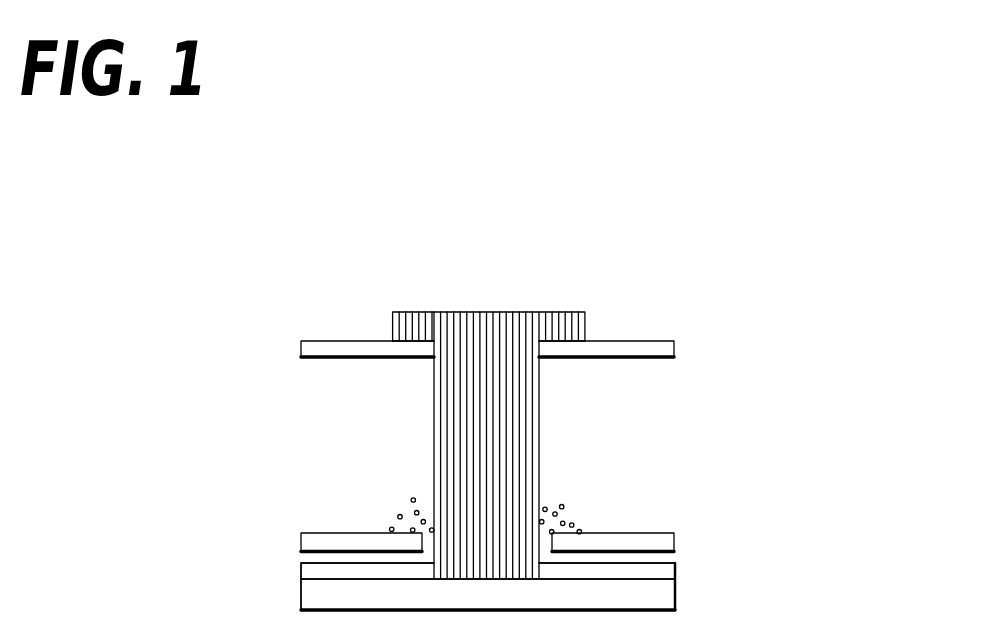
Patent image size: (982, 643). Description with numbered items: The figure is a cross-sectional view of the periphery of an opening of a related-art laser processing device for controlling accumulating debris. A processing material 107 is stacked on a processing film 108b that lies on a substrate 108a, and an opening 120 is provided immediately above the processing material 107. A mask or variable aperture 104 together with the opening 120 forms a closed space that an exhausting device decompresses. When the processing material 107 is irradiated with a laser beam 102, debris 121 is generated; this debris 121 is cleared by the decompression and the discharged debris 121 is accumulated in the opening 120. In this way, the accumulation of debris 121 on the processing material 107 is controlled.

The laser beam 102 is at (485, 333).
The mask or variable aperture 104 is at (634, 341).
The processing material 107 is at (604, 583).
The substrate 108a is at (660, 590).
The processing film 108b is at (657, 568).
The opening 120 is at (427, 537).
The debris 121 is at (557, 507).